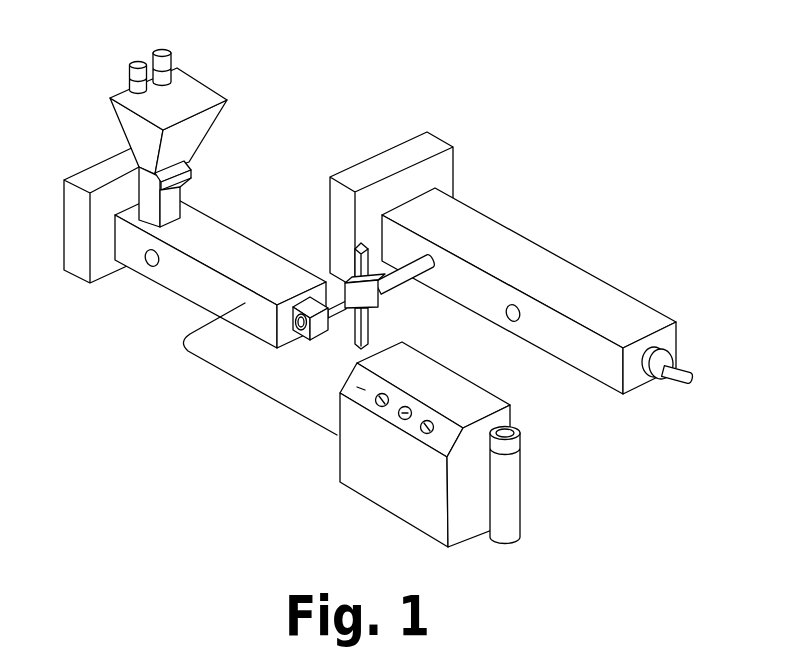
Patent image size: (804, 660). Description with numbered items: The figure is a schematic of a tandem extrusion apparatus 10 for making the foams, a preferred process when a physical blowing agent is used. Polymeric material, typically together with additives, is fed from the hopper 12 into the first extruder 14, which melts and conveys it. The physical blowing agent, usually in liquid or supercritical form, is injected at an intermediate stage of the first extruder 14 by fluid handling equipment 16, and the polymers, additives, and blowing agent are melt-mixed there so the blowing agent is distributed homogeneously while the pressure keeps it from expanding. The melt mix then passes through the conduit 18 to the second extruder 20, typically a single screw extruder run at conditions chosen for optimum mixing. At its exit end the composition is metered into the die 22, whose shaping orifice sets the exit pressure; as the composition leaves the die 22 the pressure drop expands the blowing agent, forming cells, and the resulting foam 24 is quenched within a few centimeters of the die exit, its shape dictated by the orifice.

The tandem extrusion apparatus 10 is at (426, 84).
The hopper 12 is at (207, 83).
The first extruder 14 is at (217, 215).
The fluid handling equipment 16 is at (375, 493).
The conduit 18 is at (340, 308).
The second extruder 20 is at (482, 215).
The die 22 is at (673, 340).
The foam 24 is at (685, 368).